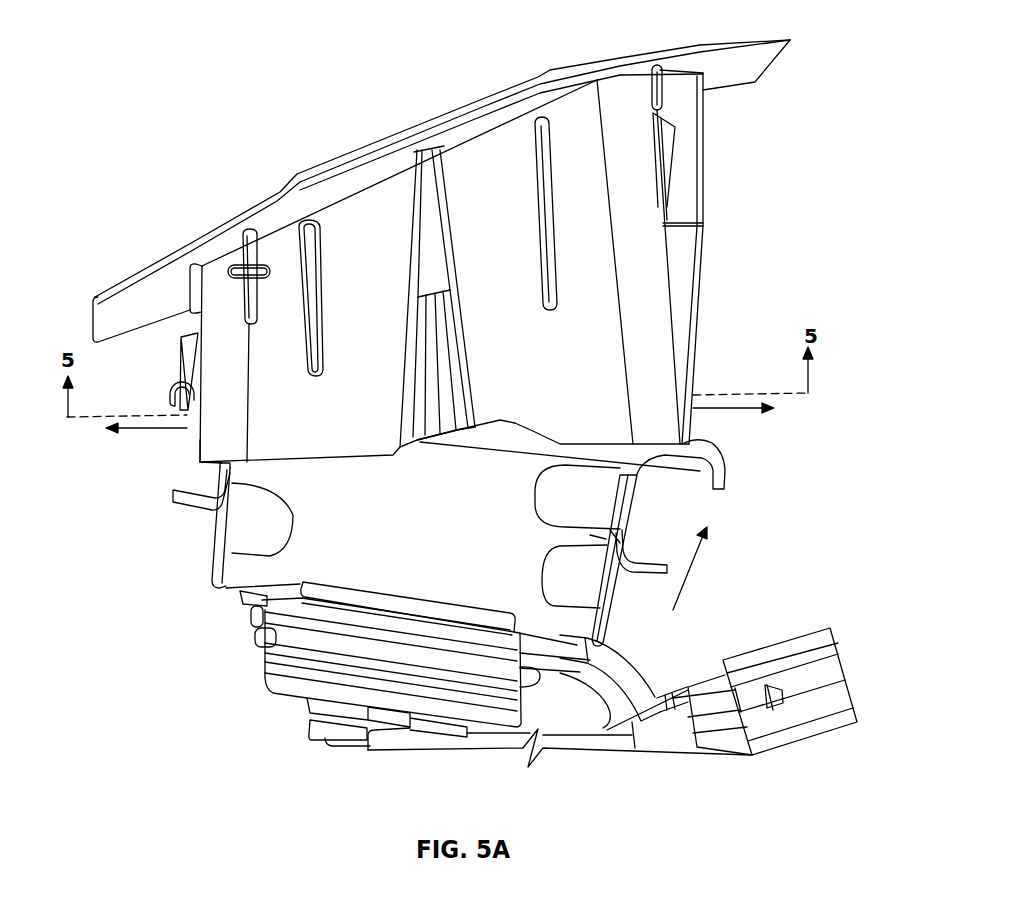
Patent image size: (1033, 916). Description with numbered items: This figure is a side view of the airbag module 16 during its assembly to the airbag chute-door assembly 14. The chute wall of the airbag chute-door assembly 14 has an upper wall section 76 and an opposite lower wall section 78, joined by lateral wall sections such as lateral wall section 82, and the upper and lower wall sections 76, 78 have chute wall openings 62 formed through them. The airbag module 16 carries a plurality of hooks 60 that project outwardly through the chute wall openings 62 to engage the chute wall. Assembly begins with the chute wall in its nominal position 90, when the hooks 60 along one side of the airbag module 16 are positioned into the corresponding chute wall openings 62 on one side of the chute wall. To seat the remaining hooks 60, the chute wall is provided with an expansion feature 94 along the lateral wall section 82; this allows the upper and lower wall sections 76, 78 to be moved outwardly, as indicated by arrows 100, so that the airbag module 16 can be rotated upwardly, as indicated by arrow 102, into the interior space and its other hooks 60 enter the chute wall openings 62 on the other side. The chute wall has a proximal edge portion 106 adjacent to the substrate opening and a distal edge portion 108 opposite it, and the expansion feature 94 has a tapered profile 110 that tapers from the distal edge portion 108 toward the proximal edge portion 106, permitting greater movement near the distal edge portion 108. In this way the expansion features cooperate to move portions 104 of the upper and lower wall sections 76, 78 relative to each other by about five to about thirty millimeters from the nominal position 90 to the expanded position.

The airbag chute-door assembly 14 is at (705, 204).
The airbag module 16 is at (235, 577).
The hooks 60 is at (186, 380).
The chute wall openings 62 is at (172, 391).
The upper wall section 76 is at (670, 288).
The lower wall section 78 is at (193, 452).
The lateral wall section 82 is at (203, 493).
The nominal position 90 is at (785, 165).
The expansion feature 94 is at (422, 440).
The arrows 100 is at (141, 431).
The arrow 102 is at (683, 567).
The portions of the upper and lower wall sections 104 is at (197, 460).
The proximal edge portion 106 is at (523, 140).
The distal edge portion 108 is at (582, 392).
The tapered profiles 110 is at (430, 233).